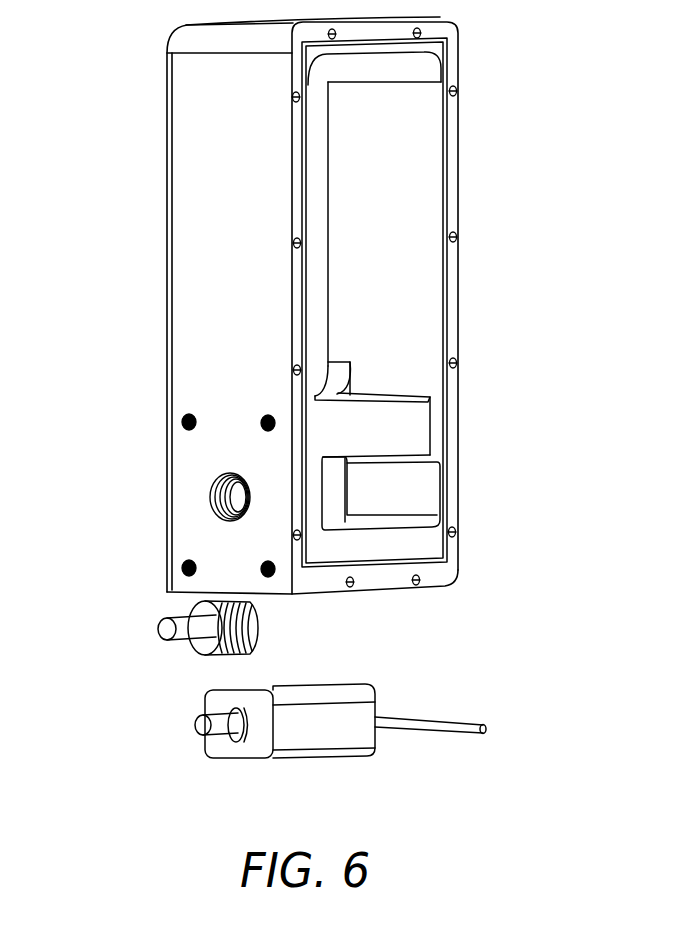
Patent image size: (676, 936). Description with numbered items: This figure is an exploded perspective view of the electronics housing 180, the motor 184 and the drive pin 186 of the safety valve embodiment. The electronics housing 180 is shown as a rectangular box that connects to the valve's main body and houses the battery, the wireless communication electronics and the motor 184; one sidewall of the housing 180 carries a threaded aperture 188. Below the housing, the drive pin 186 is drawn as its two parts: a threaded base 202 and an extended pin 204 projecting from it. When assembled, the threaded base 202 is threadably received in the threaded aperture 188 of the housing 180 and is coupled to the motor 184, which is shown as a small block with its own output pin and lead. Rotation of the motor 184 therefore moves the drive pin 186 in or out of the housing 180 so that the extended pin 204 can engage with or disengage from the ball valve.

The electronics housing 180 is at (225, 331).
The motor 184 is at (347, 740).
The drive pin 186 is at (338, 633).
The threaded aperture 188 is at (218, 501).
The threaded base 202 is at (258, 640).
The extended pin 204 is at (183, 643).